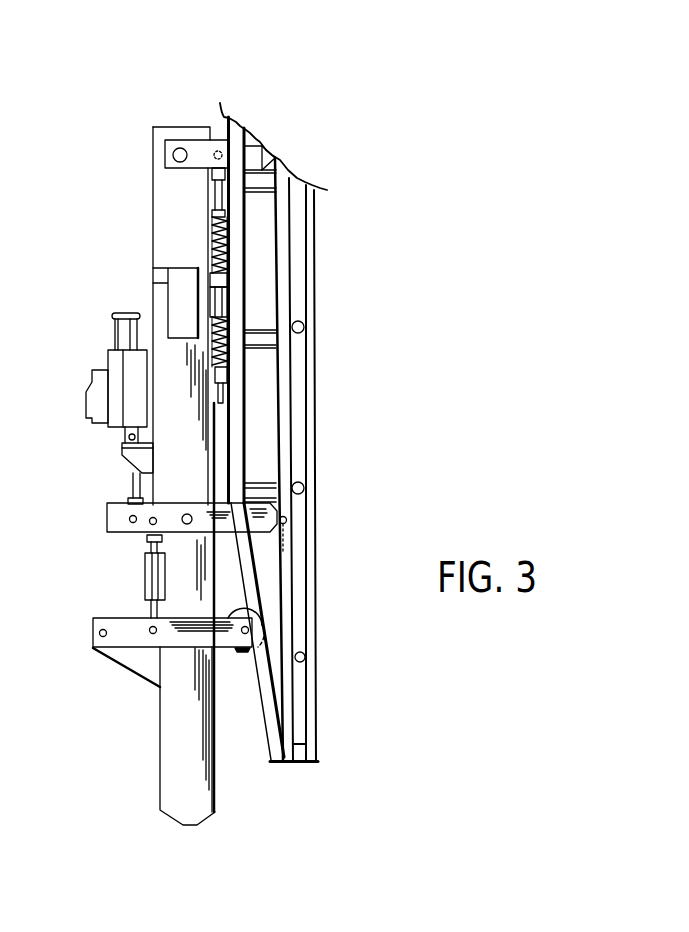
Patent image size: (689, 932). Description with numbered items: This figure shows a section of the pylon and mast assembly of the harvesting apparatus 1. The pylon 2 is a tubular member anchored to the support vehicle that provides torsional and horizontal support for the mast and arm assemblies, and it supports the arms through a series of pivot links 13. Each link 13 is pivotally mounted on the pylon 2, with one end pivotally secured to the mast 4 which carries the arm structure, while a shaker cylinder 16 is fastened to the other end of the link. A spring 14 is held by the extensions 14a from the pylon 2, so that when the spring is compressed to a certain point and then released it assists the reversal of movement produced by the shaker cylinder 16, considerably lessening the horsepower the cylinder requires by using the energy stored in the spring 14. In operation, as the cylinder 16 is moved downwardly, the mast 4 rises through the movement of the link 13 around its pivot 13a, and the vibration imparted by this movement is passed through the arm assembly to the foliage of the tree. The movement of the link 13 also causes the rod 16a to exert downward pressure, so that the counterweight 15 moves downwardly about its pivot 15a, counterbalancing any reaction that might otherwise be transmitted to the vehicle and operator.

The post setting apparatus 1 is at (450, 79).
The pylon 2 is at (172, 712).
The mast 4 is at (318, 627).
The links 13 is at (237, 498).
The pivot 13a is at (187, 513).
The spring 14 is at (272, 271).
The extensions 14a is at (225, 285).
The counterweight 15 is at (147, 660).
The pivot 15a is at (103, 637).
The shaker cylinder 16 is at (98, 397).
The rod 16a is at (147, 572).